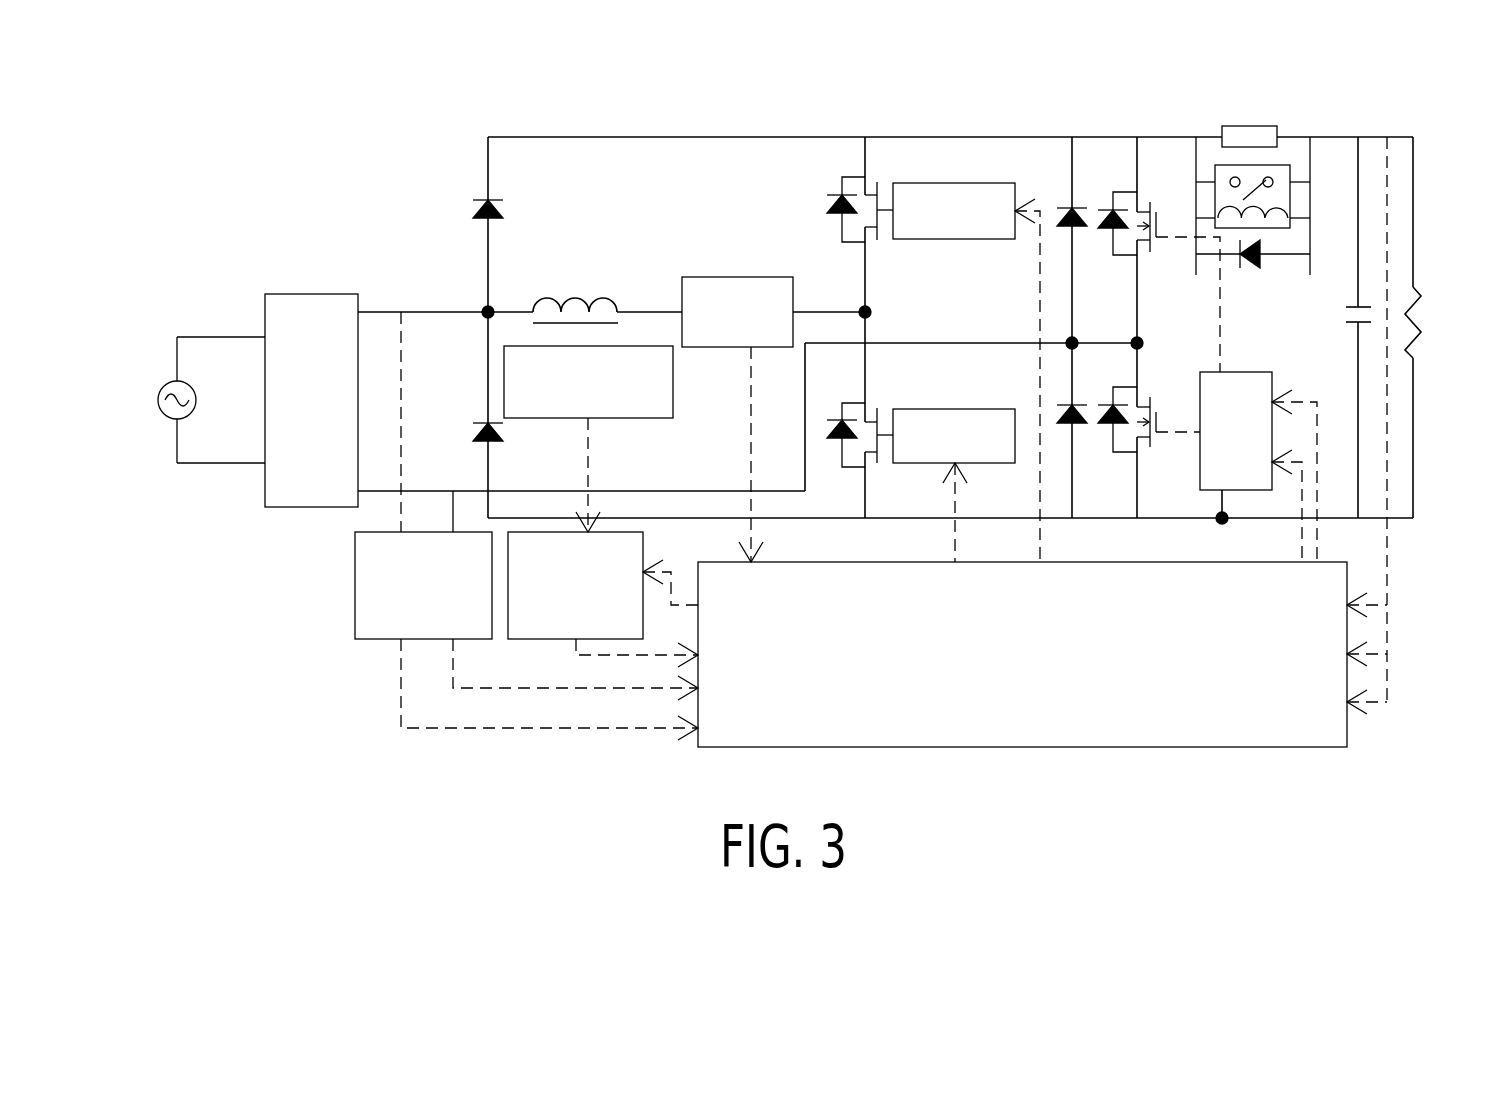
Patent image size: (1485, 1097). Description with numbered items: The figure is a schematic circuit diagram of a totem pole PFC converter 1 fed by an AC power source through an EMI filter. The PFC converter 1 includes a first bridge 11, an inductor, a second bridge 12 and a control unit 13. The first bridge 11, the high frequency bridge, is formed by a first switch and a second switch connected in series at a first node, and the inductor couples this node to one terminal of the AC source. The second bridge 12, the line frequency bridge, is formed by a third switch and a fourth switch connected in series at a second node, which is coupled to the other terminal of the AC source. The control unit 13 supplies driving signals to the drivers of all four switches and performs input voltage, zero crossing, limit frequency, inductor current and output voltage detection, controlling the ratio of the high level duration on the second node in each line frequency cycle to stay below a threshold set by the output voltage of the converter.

The PFC converter 1 is at (1469, 68).
The first bridge 11 is at (823, 123).
The second bridge 12 is at (1137, 120).
The control unit 13 is at (1023, 746).